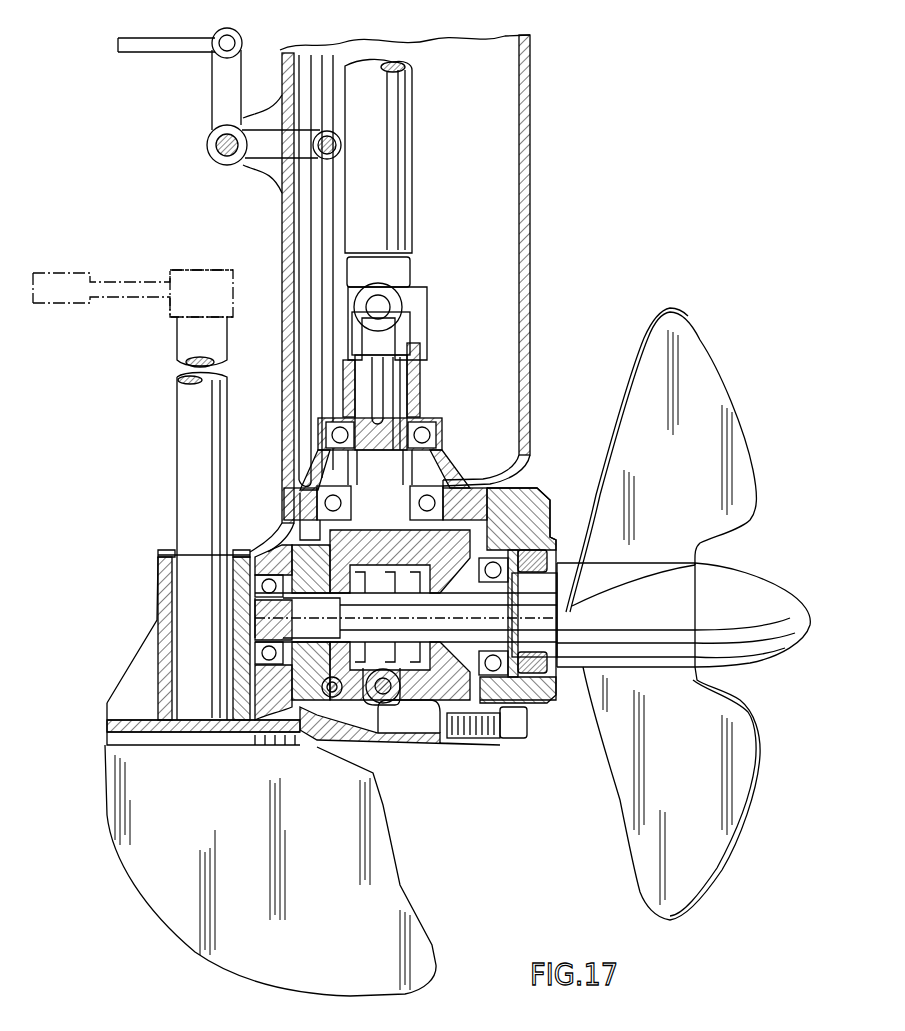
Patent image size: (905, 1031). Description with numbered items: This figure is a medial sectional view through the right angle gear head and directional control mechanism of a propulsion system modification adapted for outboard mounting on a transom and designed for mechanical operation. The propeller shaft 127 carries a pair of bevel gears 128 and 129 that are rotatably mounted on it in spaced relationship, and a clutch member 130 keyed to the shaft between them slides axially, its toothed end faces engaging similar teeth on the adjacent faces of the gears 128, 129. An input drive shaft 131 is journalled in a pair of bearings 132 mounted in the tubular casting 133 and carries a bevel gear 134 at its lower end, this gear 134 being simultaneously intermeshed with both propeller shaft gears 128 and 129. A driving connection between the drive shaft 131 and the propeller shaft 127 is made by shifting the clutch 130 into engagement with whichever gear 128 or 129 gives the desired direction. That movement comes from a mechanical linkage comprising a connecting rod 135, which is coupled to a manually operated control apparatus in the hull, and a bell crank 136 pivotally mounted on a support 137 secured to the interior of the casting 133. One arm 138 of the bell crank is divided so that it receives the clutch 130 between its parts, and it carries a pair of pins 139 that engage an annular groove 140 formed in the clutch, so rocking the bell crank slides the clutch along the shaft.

The propeller shaft 127 is at (554, 660).
The bevel gear 128 is at (393, 684).
The bevel gear 129 is at (310, 742).
The clutch member 130 is at (345, 603).
The input drive shaft 131 is at (393, 388).
The bearings 132 is at (425, 425).
The tubular casting 133 is at (533, 266).
The bevel gear 134 is at (487, 537).
The connecting rod 135 is at (320, 188).
The bell crank 136 is at (375, 735).
The support 137 is at (410, 740).
The arm of the bell crank 138 is at (480, 616).
The pins 139 is at (398, 600).
The annular groove 140 is at (359, 484).